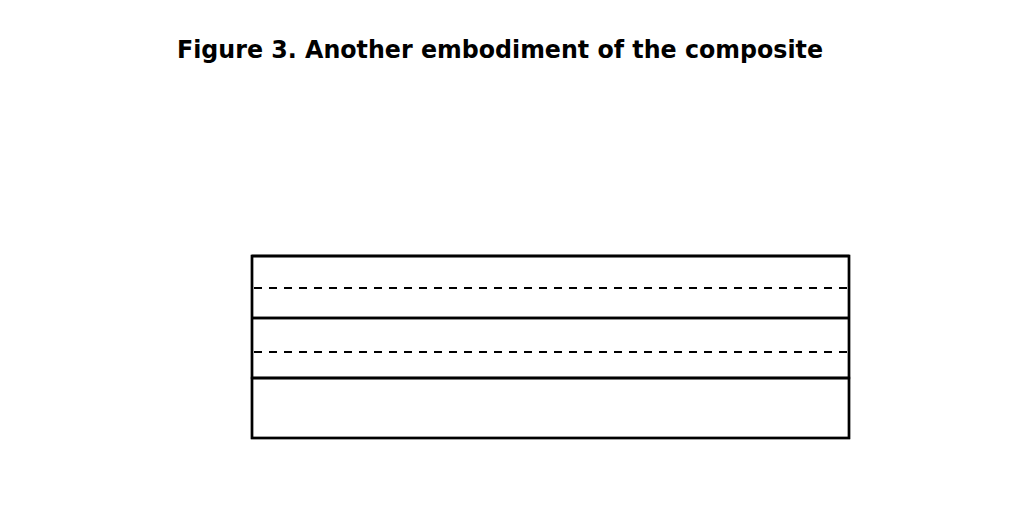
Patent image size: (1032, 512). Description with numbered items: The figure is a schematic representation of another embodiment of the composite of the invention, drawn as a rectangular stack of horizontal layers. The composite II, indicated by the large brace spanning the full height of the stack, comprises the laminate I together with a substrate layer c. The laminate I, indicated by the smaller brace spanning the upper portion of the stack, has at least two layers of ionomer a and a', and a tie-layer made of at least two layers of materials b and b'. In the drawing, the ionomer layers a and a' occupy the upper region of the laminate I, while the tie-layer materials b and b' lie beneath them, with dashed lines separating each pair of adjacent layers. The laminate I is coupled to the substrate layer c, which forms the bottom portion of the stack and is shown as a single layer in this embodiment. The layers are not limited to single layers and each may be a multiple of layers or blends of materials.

The composite II is at (108, 253).
The laminate I is at (228, 258).
The ionomer layer a is at (550, 239).
The ionomer layer a' is at (566, 269).
The tie-layer material b is at (580, 335).
The tie-layer material b' is at (579, 392).
The substrate layer c is at (550, 408).